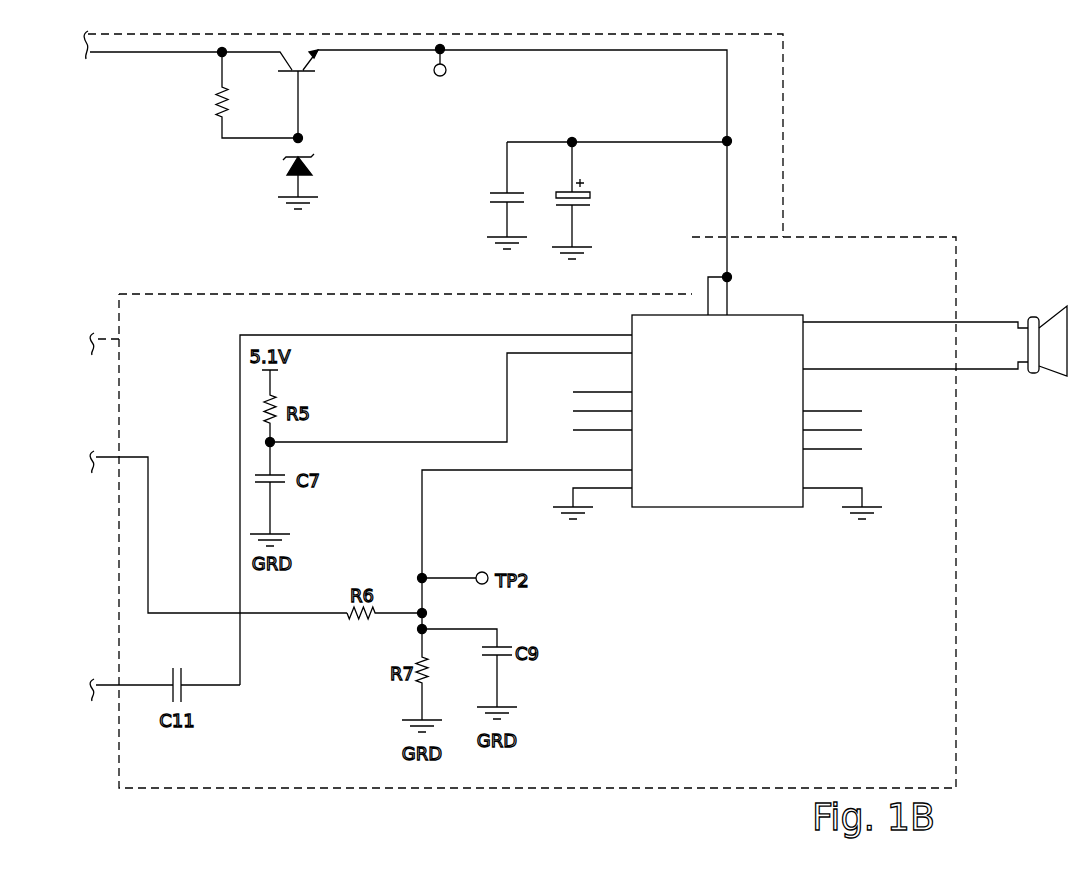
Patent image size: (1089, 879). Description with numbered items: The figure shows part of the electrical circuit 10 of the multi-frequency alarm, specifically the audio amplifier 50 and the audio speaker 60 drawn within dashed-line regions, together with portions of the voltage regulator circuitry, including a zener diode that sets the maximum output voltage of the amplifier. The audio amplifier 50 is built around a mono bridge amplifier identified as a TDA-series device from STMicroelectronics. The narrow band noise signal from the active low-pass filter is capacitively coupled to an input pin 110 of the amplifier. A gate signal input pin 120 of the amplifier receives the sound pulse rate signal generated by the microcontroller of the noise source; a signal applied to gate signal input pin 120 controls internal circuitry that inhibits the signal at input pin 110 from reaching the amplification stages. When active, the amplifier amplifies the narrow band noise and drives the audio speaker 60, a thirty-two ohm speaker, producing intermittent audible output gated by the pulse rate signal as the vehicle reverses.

The electrical circuit 10 is at (818, 95).
The audio amplifier 50 is at (862, 237).
The audio speaker 60 is at (1050, 318).
The input pin 110 is at (632, 335).
The gate signal input pin 120 is at (632, 470).